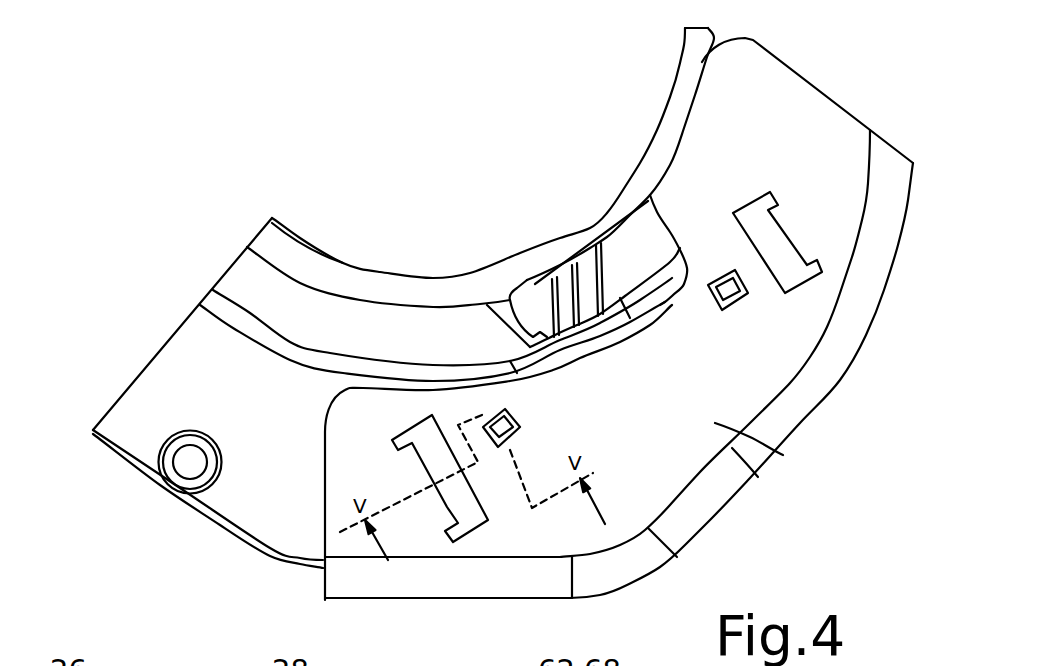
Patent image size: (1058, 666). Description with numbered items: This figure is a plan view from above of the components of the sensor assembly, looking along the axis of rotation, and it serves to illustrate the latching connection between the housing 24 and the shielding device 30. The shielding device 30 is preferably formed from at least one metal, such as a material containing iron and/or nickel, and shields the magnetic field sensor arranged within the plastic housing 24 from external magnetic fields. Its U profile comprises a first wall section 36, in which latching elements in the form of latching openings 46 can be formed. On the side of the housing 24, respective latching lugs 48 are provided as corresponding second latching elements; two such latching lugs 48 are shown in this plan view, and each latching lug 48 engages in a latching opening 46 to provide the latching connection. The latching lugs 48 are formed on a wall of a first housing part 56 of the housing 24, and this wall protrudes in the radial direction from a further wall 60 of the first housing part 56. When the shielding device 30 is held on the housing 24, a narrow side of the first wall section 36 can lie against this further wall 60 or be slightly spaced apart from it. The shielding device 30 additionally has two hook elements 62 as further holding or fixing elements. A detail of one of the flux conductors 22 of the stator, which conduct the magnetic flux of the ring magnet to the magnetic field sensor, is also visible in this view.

The flux conductor 22 is at (633, 247).
The housing 24 is at (279, 578).
The shielding device 30 is at (850, 80).
The first wall section 36 is at (783, 455).
The latching opening 46 is at (740, 300).
The latching lug 48 is at (492, 426).
The first housing part 56 is at (159, 381).
The further wall 60 is at (340, 367).
The hook element 62 is at (793, 238).